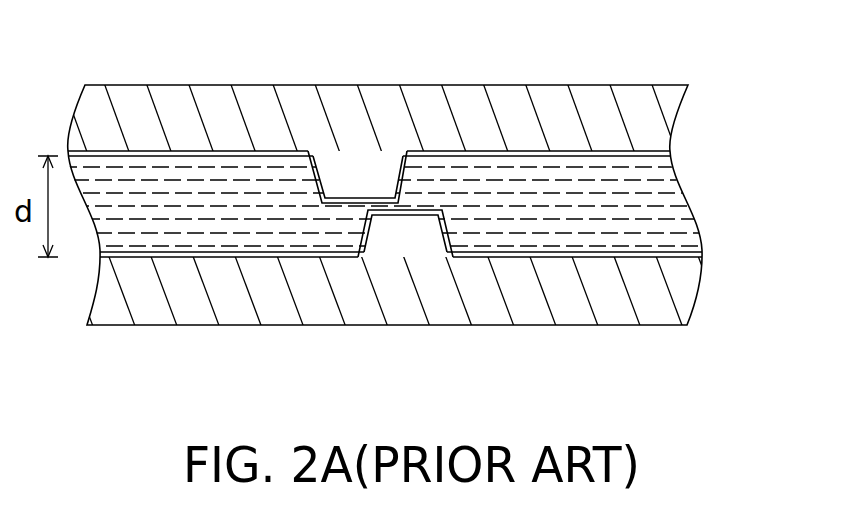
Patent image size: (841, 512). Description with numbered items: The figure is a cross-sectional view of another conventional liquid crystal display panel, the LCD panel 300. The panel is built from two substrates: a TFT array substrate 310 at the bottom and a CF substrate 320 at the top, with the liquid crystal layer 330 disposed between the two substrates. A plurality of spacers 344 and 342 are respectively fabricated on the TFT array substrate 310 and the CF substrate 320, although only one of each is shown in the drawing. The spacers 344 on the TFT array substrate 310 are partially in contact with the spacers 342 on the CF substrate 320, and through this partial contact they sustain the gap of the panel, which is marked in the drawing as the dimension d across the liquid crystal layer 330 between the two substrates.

The LCD panel 300 is at (740, 427).
The TFT array substrate 310 is at (718, 252).
The CF substrate 320 is at (718, 87).
The liquid crystal layer 330 is at (657, 195).
The spacer 342 is at (351, 173).
The spacer 344 is at (407, 237).